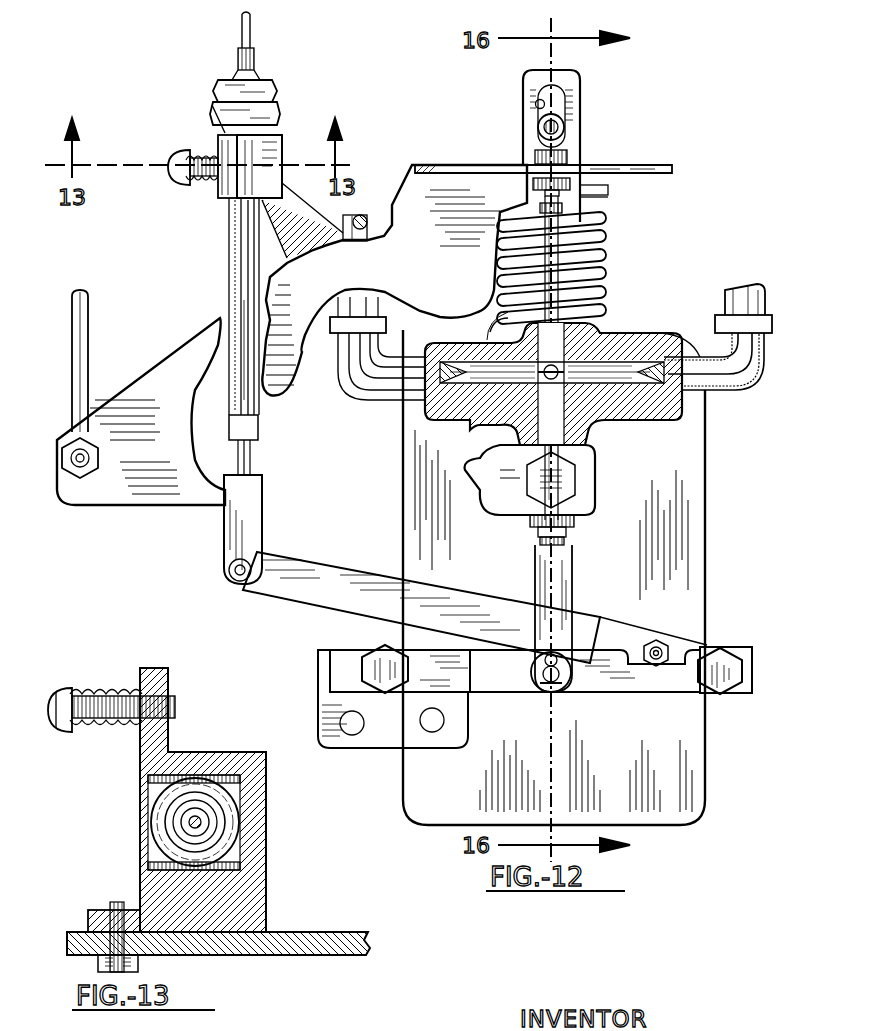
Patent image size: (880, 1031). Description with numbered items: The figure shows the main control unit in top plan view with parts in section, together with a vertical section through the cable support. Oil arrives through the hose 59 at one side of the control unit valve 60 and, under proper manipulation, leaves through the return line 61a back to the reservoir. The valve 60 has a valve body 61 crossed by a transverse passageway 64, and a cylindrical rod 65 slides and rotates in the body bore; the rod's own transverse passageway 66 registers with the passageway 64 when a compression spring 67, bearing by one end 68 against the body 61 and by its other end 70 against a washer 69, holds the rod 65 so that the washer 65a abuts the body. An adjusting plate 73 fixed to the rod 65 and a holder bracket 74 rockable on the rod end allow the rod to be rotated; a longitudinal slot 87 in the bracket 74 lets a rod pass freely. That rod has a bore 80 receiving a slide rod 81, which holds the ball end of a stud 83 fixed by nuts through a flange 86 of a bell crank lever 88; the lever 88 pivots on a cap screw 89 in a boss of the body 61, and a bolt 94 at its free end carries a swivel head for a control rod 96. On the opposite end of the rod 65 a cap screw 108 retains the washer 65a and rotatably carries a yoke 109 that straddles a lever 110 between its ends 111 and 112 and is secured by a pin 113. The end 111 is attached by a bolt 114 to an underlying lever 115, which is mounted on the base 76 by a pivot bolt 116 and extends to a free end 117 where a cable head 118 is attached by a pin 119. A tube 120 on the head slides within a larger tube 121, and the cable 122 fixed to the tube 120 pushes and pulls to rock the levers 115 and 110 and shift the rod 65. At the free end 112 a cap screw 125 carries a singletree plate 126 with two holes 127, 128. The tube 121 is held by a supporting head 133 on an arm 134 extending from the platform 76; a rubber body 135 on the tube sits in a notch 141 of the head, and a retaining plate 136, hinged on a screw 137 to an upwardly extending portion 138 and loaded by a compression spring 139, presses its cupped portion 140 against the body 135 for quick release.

In FIG. 12, the hose 59 is at (345, 222).
In FIG. 12, the control unit valve 60 is at (483, 330).
In FIG. 12, the valve body 61 is at (592, 424).
In FIG. 12, the return line 61a is at (746, 299).
In FIG. 12, the transverse passageway 64 is at (497, 380).
In FIG. 12, the cylindrical rod 65 is at (548, 218).
In FIG. 12, the washer 65a is at (576, 520).
In FIG. 12, the transverse passageway 66 is at (546, 380).
In FIG. 12, the compression spring 67 is at (606, 280).
In FIG. 12, the spring end 68 is at (503, 313).
In FIG. 12, the washer 69 is at (610, 190).
In FIG. 12, the spring end 70 is at (606, 198).
In FIG. 12, the adjusting plate 73 is at (636, 167).
In FIG. 12, the holder bracket 74 is at (578, 86).
In FIG. 12, the base 76 is at (408, 485).
In FIG. 12, the bore 80 is at (535, 155).
In FIG. 12, the slide rod 81 is at (560, 126).
In FIG. 12, the stud 83 is at (556, 204).
In FIG. 12, the flange 86 is at (487, 163).
In FIG. 12, the longitudinal slot 87 is at (535, 103).
In FIG. 12, the bell crank lever 88 is at (408, 256).
In FIG. 12, the cap screw 89 is at (540, 480).
In FIG. 12, the bolt 94 is at (85, 455).
In FIG. 12, the control rod 96 is at (74, 324).
In FIG. 12, the cap screw 108 is at (540, 540).
In FIG. 12, the yoke 109 is at (565, 592).
In FIG. 12, the lever 110 is at (612, 688).
In FIG. 12, the lever end 111 is at (752, 664).
In FIG. 12, the free end 112 is at (364, 656).
In FIG. 12, the pin 113 is at (540, 672).
In FIG. 12, the bolt 114 is at (720, 656).
In FIG. 12, the lever 115 is at (434, 594).
In FIG. 12, the pivot bolt 116 is at (662, 640).
In FIG. 12, the free end 117 is at (302, 568).
In FIG. 12, the cable head 118 is at (250, 506).
In FIG. 12, the pin 119 is at (229, 572).
In FIG. 12, the tube 120 is at (252, 456).
In FIG. 12, the tube 121 is at (250, 430).
In FIG. 13, the tube 121 is at (165, 812).
In FIG. 12, the cable 122 is at (242, 19).
In FIG. 13, the cable 122 is at (190, 828).
In FIG. 12, the cap screw 125 is at (405, 672).
In FIG. 12, the plate 126 is at (325, 678).
In FIG. 12, the hole 127 is at (354, 723).
In FIG. 12, the hole 128 is at (425, 724).
In FIG. 12, the supporting head 133 is at (262, 150).
In FIG. 13, the supporting head 133 is at (78, 918).
In FIG. 12, the arm 134 is at (180, 128).
In FIG. 13, the arm 134 is at (318, 930).
In FIG. 13, the rubber body 135 is at (228, 805).
In FIG. 12, the retaining plate 136 is at (226, 198).
In FIG. 13, the retaining plate 136 is at (140, 755).
In FIG. 12, the screw 137 is at (180, 186).
In FIG. 13, the screw 137 is at (52, 716).
In FIG. 12, the upwardly extending portion 138 is at (240, 188).
In FIG. 13, the upwardly extending portion 138 is at (158, 668).
In FIG. 12, the compression spring 139 is at (190, 158).
In FIG. 13, the compression spring 139 is at (116, 690).
In FIG. 13, the cupped portion 140 is at (152, 828).
In FIG. 13, the notch 141 is at (222, 775).